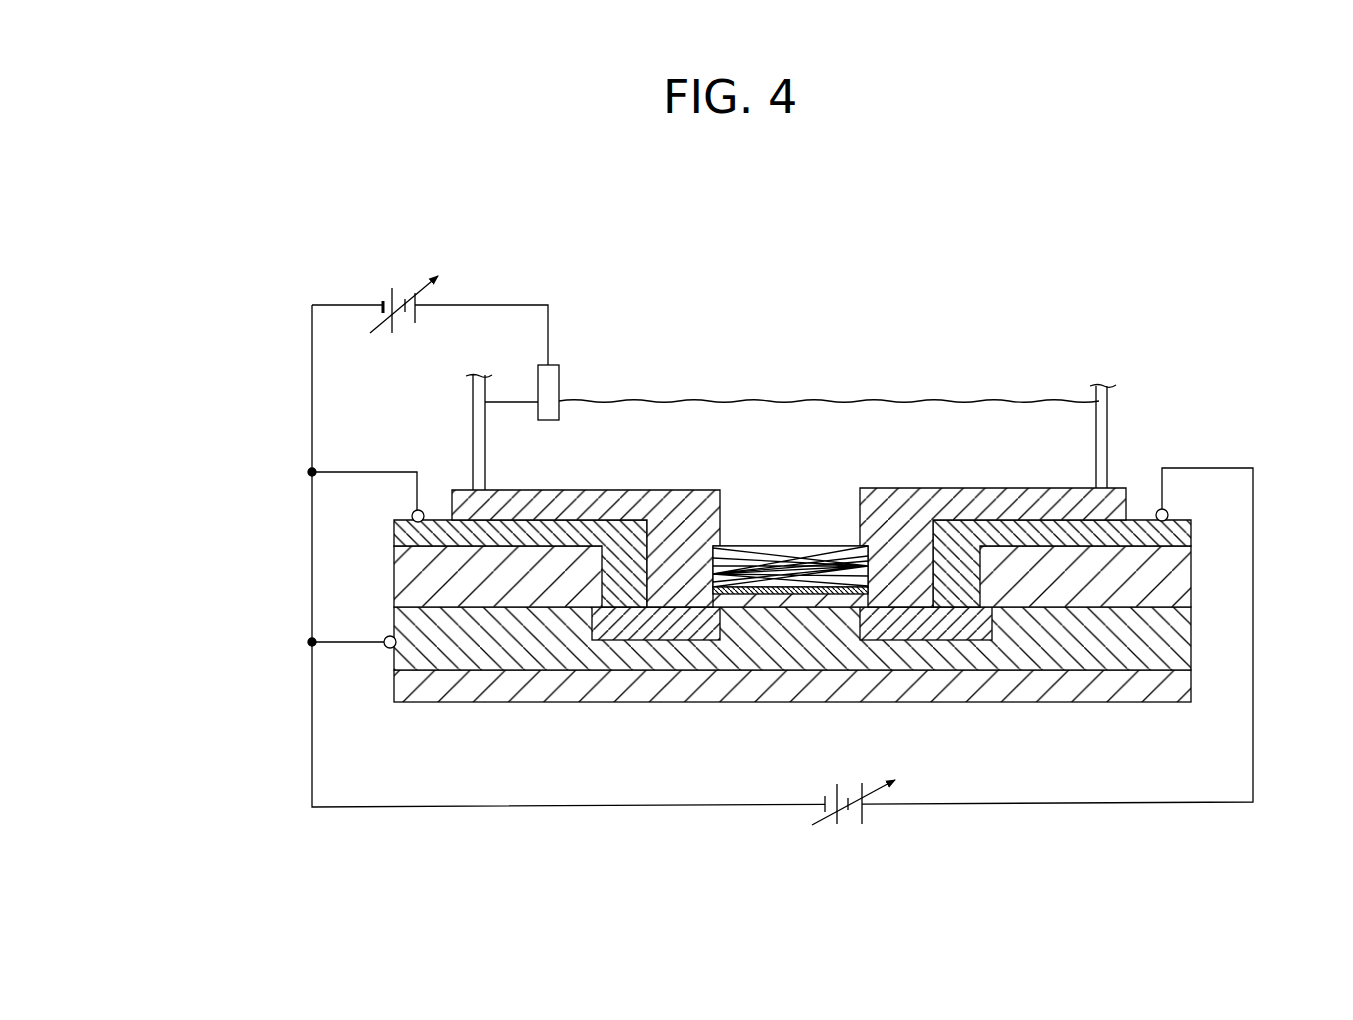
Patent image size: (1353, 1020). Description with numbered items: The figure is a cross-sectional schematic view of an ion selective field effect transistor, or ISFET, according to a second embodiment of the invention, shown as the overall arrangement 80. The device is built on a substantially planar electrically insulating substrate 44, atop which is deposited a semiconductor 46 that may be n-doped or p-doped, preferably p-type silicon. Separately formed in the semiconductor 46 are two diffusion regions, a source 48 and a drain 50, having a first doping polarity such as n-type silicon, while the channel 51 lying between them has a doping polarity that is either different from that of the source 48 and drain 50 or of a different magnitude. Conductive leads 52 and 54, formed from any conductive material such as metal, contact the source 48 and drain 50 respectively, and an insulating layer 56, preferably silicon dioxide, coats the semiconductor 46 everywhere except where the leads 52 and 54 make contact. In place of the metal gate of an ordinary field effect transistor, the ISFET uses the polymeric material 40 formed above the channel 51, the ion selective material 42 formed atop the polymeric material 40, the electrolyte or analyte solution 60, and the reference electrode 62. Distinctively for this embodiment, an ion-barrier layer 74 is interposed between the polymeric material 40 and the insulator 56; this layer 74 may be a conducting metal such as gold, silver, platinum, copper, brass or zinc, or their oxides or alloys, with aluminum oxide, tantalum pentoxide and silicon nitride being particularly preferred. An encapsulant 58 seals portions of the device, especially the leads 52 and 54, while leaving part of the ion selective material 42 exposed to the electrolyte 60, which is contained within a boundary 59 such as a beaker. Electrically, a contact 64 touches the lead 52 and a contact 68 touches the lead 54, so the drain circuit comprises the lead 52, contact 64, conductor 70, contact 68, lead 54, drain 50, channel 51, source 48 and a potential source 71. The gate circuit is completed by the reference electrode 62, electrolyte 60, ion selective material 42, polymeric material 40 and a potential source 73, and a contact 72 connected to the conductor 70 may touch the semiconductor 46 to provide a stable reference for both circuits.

The polymeric material 40 is at (733, 582).
The ion selective material 42 is at (815, 560).
The substrate 44 is at (1168, 688).
The semiconductor 46 is at (1185, 630).
The source 48 is at (638, 628).
The drain 50 is at (940, 635).
The channel 51 is at (770, 652).
The lead 52 is at (394, 538).
The lead 54 is at (1180, 530).
The insulating layer 56 is at (1178, 583).
The encapsulant 58 is at (465, 500).
The boundary 59 is at (1104, 425).
The electrolyte or analyte solution 60 is at (920, 412).
The reference electrode 62 is at (550, 388).
The contact 64 is at (410, 513).
The contact 68 is at (1168, 510).
The conductor 70 is at (312, 787).
The potential source 71 is at (879, 831).
The contact 72 is at (390, 650).
The potential source 73 is at (417, 269).
The ion-barrier layer 74 is at (730, 588).
The transistor arrangement 80 is at (374, 196).